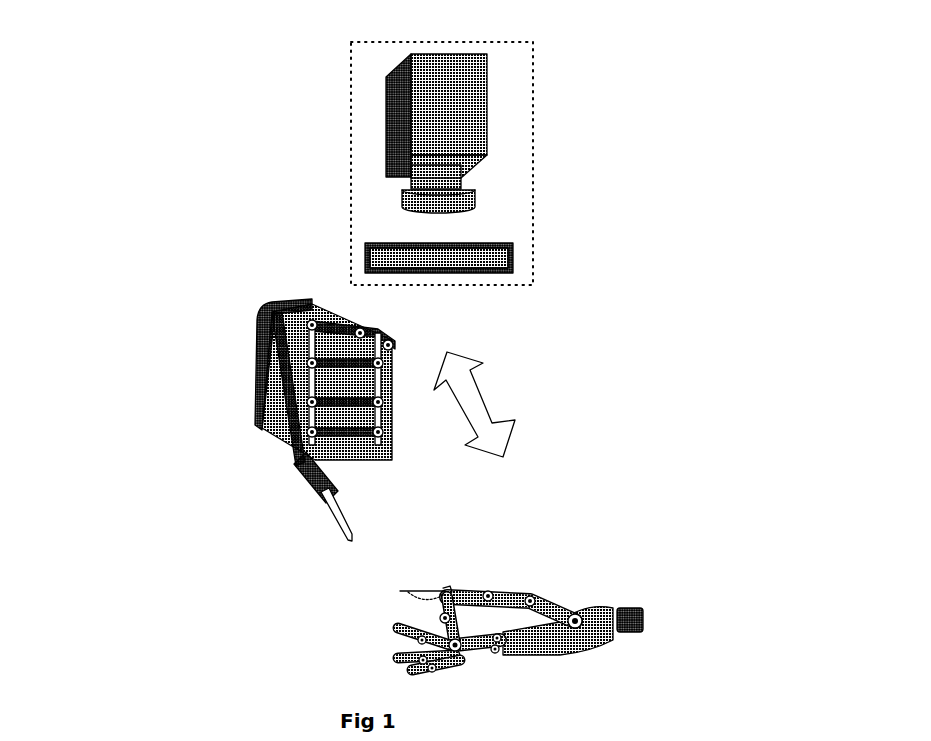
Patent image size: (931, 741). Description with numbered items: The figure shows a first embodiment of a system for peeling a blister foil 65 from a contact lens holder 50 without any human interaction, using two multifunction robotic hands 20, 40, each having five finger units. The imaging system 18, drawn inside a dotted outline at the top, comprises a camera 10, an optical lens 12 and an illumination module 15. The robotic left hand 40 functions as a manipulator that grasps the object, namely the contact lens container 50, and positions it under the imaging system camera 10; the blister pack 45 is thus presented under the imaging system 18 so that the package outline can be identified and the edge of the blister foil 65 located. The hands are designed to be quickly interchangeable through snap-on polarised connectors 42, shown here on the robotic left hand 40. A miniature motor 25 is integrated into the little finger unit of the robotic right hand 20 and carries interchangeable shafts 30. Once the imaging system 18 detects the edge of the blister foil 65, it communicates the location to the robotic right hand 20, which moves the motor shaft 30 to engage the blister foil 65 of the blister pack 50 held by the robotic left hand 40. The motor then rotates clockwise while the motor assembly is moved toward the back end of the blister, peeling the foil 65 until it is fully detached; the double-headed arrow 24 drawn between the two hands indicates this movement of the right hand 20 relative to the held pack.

The camera 10 is at (390, 86).
The optical lens 12 is at (430, 182).
The illumination module 15 is at (362, 258).
The imaging system 18 is at (533, 78).
The robotic right hand 20 is at (258, 358).
The direction of movement arrow 24 is at (485, 395).
The miniature motor 25 is at (305, 482).
The interchangeable shaft 30 is at (330, 518).
The robotic left hand 40 is at (607, 638).
The snap-on polarised connector 42 is at (640, 618).
The blister pack 45 is at (400, 591).
The contact lens holder 50 is at (440, 604).
The blister foil 65 is at (445, 587).